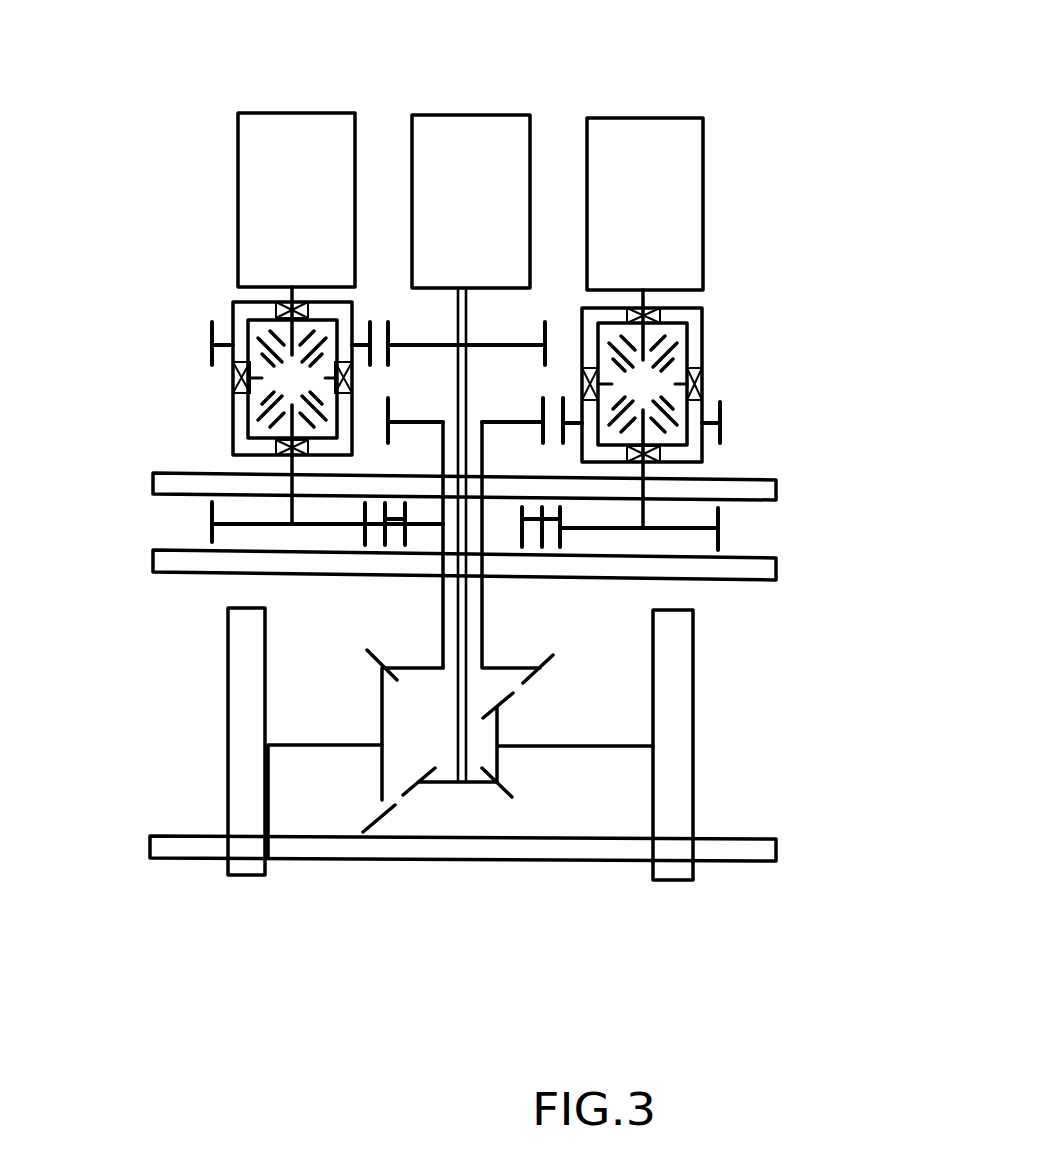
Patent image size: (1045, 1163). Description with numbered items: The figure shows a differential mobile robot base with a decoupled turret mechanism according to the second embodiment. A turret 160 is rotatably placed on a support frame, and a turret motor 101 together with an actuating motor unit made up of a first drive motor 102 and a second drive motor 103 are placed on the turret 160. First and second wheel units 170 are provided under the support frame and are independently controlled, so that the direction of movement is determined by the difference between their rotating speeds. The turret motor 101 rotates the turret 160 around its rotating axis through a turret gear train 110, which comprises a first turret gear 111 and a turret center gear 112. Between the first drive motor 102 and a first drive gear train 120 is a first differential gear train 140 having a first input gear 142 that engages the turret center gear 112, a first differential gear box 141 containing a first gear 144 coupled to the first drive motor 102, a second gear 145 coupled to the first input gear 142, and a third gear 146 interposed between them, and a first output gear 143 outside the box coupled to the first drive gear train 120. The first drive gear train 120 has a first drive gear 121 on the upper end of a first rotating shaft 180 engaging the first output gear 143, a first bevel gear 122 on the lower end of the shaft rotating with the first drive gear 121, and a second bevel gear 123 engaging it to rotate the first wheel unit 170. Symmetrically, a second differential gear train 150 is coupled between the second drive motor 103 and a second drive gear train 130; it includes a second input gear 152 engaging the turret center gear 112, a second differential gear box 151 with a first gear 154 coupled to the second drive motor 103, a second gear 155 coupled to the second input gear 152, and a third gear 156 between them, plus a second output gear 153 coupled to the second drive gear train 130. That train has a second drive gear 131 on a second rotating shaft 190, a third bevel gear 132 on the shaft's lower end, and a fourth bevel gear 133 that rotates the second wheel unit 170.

The turret motor 101 is at (468, 138).
The first drive motor 102 is at (652, 140).
The second drive motor 103 is at (290, 137).
The turret gear train 110 is at (553, 512).
The first turret gear 111 is at (560, 507).
The turret center gear 112 is at (542, 543).
The first drive gear train 120 is at (328, 705).
The first drive gear 121 is at (422, 422).
The first bevel gear 122 is at (428, 667).
The second bevel gear 123 is at (380, 770).
The second drive gear train 130 is at (565, 687).
The second drive gear 131 is at (503, 345).
The third bevel gear 132 is at (467, 785).
The fourth bevel gear 133 is at (498, 730).
The first differential gear train 140 is at (717, 403).
The first differential gear box 141 is at (660, 308).
The first input gear 142 is at (675, 487).
The first output gear 143 is at (718, 420).
The first gear 144 is at (688, 332).
The second gear 145 is at (690, 398).
The third gear 146 is at (702, 372).
The second differential gear train 150 is at (234, 400).
The second differential gear box 151 is at (285, 305).
The second input gear 152 is at (280, 522).
The second output gear 153 is at (235, 345).
The first gear 154 is at (265, 324).
The second gear 155 is at (262, 402).
The third gear 156 is at (250, 377).
The turret 160 is at (158, 490).
The first wheel unit 170 is at (228, 722).
The first rotating shaft 180 is at (463, 300).
The second rotating shaft 190 is at (441, 613).